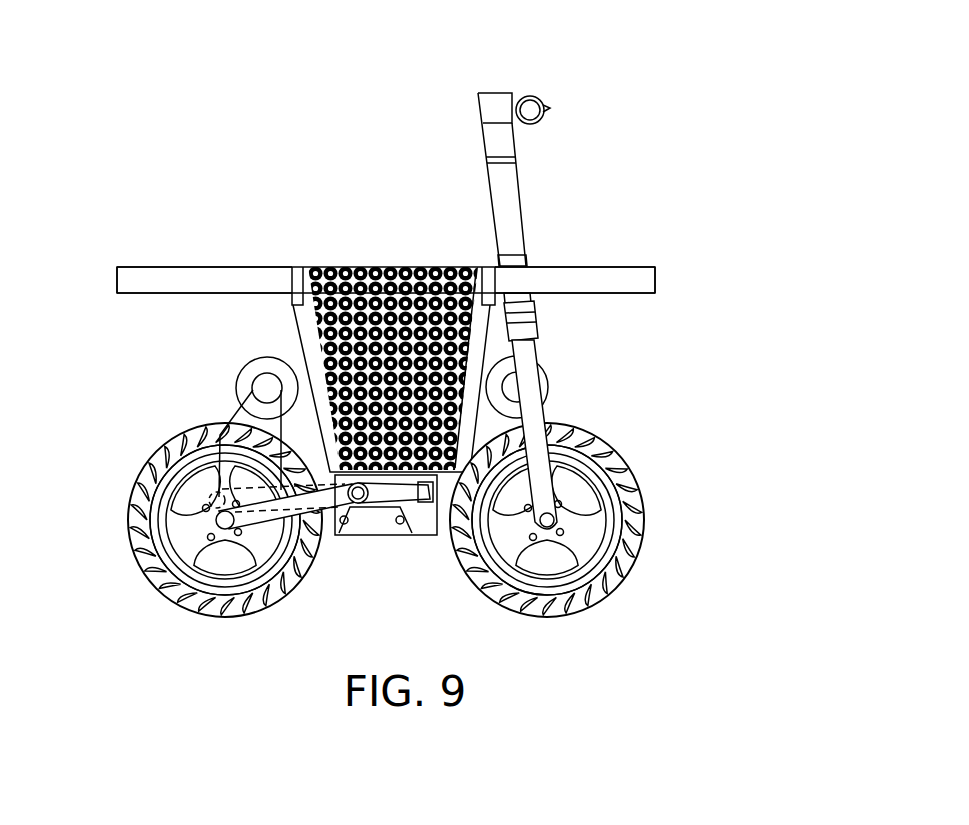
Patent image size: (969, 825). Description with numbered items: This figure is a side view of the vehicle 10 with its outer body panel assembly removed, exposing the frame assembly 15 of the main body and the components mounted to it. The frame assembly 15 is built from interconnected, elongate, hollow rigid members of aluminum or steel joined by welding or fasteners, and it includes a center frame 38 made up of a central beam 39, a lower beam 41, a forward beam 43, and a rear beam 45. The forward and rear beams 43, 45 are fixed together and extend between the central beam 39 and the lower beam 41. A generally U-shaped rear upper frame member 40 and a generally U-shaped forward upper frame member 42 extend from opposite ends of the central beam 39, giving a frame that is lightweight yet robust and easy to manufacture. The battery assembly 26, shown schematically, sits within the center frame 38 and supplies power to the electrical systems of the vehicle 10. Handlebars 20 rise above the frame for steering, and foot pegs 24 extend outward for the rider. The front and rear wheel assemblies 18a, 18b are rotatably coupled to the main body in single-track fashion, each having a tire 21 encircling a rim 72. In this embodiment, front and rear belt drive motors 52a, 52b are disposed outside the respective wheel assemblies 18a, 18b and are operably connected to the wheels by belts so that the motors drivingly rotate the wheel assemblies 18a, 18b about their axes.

The vehicle 10 is at (104, 241).
The frame assembly 15 is at (568, 267).
The front wheel assembly 18a is at (628, 565).
The rear wheel assembly 18b is at (147, 570).
The handlebars 20 is at (500, 103).
The tire 21 is at (263, 607).
The foot pegs 24 is at (362, 503).
The battery assembly 26 is at (356, 268).
The center frame 38 is at (290, 318).
The central beam 39 is at (448, 268).
The rear upper frame member 40 is at (161, 276).
The lower beam 41 is at (418, 535).
The forward upper frame member 42 is at (613, 274).
The forward beam 43 is at (483, 328).
The rear beam 45 is at (303, 337).
The front belt drive motor 52a is at (551, 387).
The rear belt drive motor 52b is at (252, 386).
The rim 72 is at (170, 585).